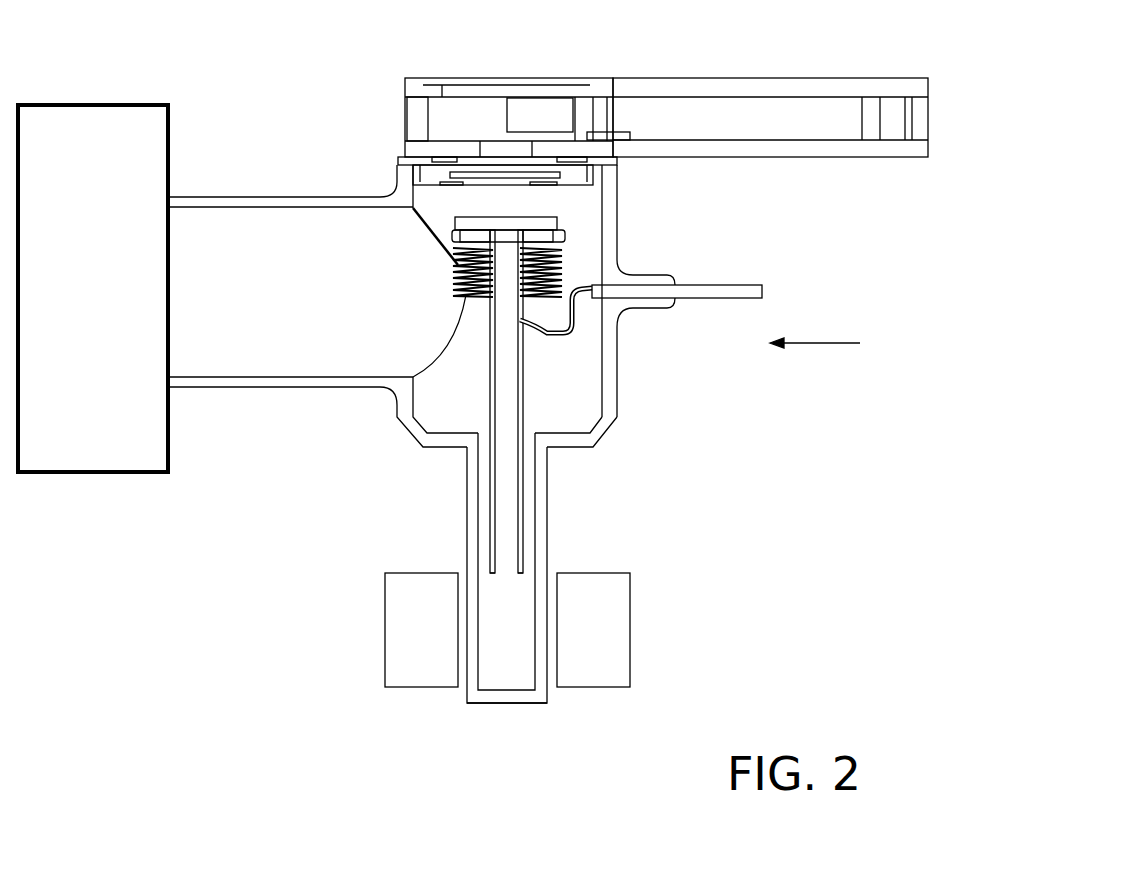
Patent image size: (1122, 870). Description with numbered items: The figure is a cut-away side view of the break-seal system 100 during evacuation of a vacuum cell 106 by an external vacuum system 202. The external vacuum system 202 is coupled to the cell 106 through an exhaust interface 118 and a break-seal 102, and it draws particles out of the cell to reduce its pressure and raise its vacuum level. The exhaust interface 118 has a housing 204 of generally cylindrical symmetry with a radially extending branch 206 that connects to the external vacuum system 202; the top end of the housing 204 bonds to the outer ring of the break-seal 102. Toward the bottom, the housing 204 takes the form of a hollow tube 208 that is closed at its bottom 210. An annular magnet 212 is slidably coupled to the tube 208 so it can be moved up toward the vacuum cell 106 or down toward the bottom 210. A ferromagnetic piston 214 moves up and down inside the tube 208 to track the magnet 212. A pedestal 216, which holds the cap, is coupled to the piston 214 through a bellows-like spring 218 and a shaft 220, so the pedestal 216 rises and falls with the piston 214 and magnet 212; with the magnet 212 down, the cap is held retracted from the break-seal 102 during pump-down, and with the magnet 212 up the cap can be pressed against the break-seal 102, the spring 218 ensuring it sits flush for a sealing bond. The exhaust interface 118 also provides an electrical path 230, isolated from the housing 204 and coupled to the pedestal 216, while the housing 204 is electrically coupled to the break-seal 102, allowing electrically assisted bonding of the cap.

The break-seal system 100 is at (441, 29).
The break-seal 102 is at (395, 158).
The vacuum cell 106 is at (733, 127).
The exhaust interface 118 is at (839, 345).
The external vacuum system 202 is at (73, 344).
The housing 204 is at (613, 233).
The radially extending branch 206 is at (203, 197).
The hollow tube 208 is at (540, 525).
The bottom 210 is at (513, 703).
The annular magnet 212 is at (403, 648).
The piston 214 is at (487, 648).
The pedestal 216 is at (453, 243).
The bellows-like spring 218 is at (453, 280).
The shaft 220 is at (521, 390).
The electrical path 230 is at (715, 287).